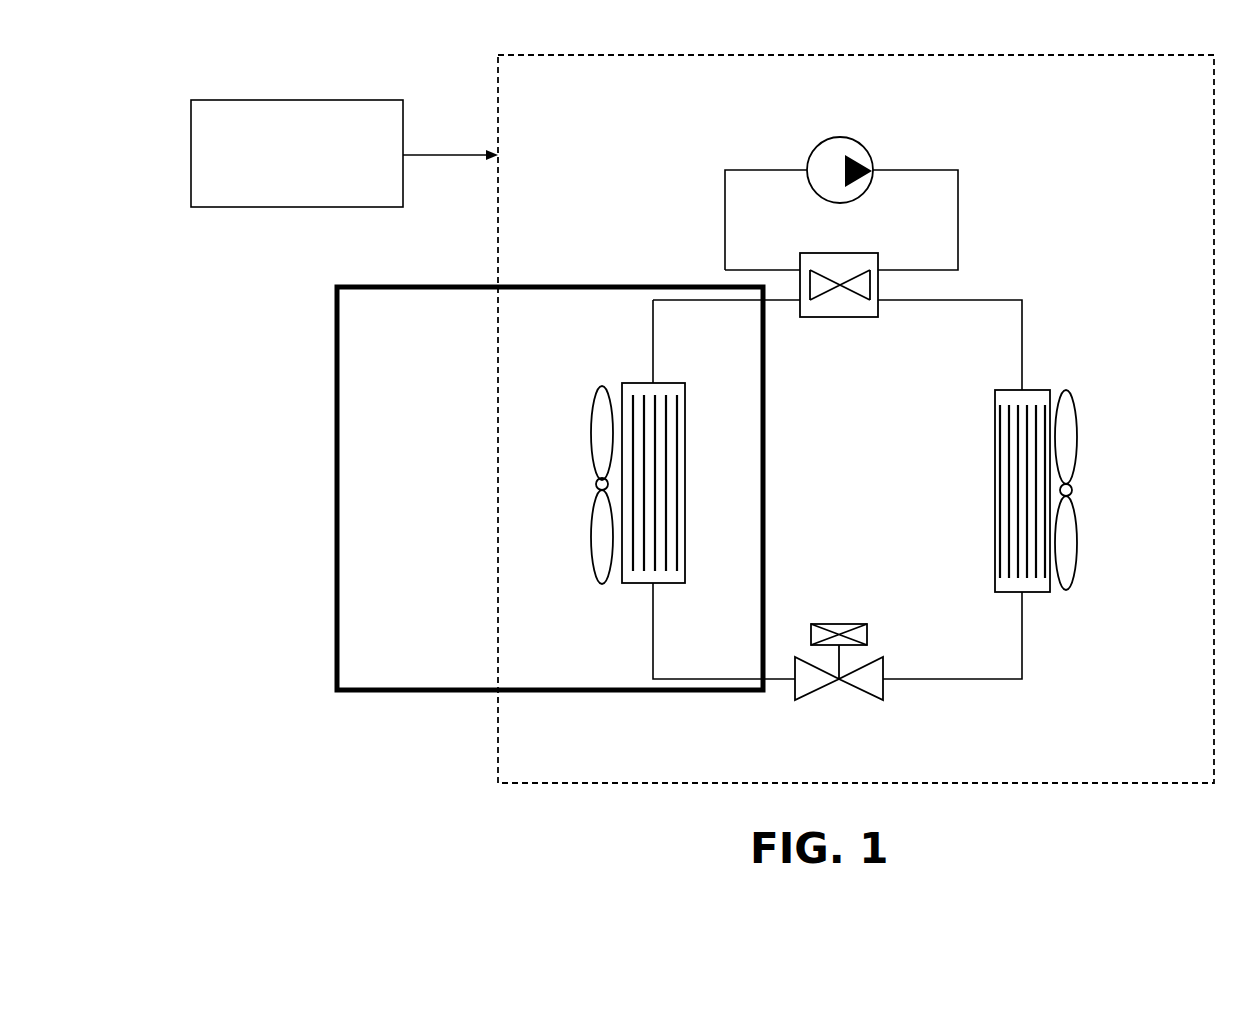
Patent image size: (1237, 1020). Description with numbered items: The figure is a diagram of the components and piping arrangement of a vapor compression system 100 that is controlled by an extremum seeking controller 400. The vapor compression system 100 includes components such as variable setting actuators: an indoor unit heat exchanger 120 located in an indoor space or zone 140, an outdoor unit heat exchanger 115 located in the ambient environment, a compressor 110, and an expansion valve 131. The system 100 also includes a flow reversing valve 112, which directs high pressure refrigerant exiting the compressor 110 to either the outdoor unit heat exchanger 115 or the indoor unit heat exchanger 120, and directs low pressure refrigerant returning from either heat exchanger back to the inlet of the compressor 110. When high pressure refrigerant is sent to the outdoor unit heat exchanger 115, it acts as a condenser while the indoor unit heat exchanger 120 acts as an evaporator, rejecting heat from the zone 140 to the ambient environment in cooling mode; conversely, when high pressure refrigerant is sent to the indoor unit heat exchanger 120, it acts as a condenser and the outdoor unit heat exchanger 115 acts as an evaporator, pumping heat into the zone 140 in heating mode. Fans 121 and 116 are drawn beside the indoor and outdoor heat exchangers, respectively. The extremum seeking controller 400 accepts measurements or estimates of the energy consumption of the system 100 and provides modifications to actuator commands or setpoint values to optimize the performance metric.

The vapor compression system 100 is at (1148, 768).
The compressor 110 is at (832, 140).
The flow reversing valve 112 is at (850, 320).
The outdoor unit heat exchanger 115 is at (995, 470).
The outdoor fan 116 is at (1077, 478).
The indoor unit heat exchanger 120 is at (686, 458).
The indoor fan 121 is at (596, 480).
The expansion valve 131 is at (875, 705).
The indoor space or zone 140 is at (343, 653).
The extremum seeking controller 400 is at (290, 100).